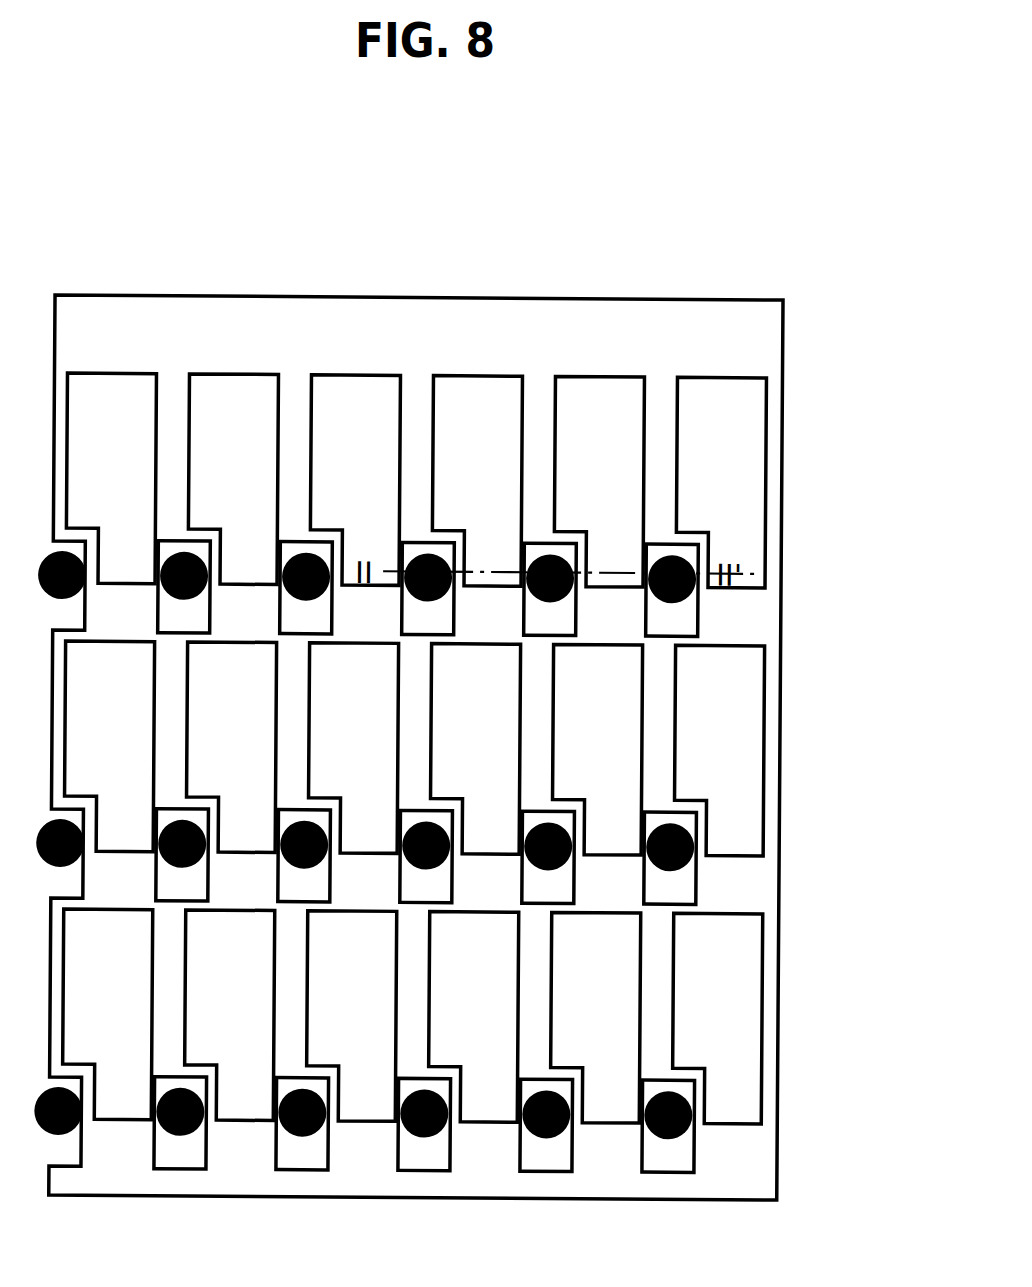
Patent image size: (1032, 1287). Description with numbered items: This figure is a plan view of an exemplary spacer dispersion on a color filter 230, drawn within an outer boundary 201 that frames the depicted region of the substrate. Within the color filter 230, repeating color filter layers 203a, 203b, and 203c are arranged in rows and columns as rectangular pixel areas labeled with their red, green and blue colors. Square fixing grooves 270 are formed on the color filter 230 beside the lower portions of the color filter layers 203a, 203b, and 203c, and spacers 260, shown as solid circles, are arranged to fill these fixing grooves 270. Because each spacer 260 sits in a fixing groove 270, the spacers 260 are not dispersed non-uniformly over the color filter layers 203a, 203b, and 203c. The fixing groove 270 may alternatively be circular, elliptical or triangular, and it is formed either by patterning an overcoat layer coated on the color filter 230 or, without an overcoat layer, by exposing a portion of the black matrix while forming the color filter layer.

The substrate 201 is at (772, 341).
The color filter 230 is at (922, 447).
The color filter layer 203a is at (113, 378).
The color filter layer 203b is at (240, 378).
The color filter layer 203c is at (353, 378).
The spacer 260 is at (682, 550).
The fixing groove 270 is at (683, 617).